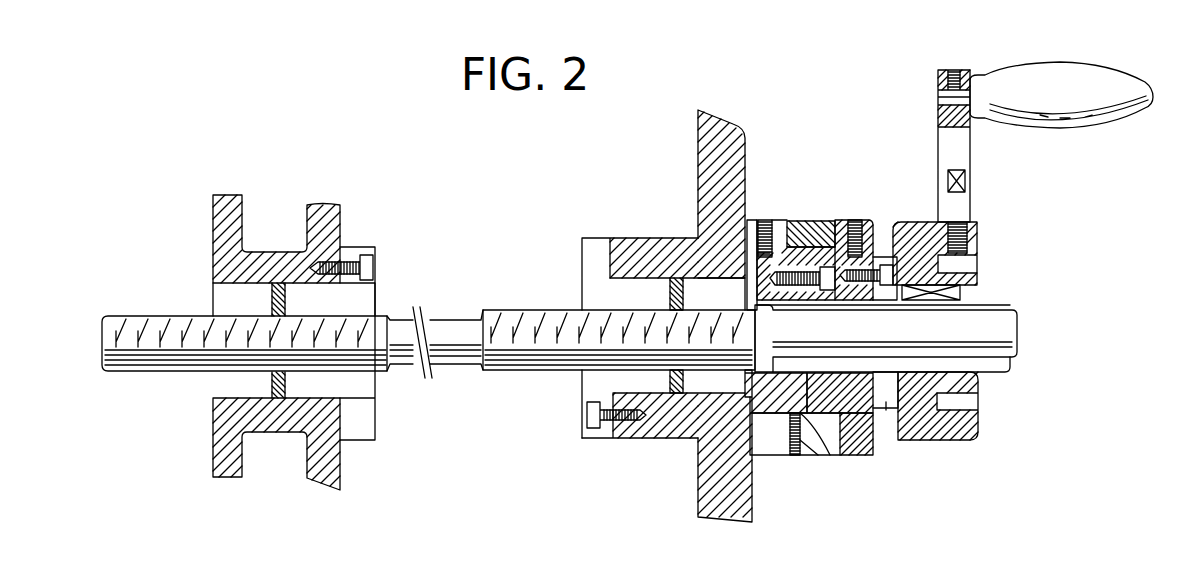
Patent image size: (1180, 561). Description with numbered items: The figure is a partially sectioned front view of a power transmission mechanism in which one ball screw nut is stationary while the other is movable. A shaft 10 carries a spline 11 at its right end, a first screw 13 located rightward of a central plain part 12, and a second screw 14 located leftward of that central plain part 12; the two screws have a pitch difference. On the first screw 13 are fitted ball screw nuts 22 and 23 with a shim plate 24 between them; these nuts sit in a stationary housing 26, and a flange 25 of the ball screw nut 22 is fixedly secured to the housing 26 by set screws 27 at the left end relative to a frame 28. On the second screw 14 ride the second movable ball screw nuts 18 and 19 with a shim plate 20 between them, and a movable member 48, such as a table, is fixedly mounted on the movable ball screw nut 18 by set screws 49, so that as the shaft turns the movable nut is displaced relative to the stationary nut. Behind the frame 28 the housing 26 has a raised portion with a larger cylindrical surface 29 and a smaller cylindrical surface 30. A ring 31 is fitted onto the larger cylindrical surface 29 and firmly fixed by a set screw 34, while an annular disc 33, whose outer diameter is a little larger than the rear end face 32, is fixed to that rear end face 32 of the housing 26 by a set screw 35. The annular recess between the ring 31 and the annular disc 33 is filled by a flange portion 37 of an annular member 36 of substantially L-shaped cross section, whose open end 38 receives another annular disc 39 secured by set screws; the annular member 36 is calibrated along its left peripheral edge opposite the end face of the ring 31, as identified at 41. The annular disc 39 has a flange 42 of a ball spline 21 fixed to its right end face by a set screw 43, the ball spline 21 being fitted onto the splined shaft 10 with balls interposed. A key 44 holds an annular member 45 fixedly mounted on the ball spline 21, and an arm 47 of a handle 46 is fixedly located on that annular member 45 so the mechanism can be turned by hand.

The shaft 10 is at (460, 365).
The spline 11 is at (1017, 318).
The central plain part 12 is at (455, 320).
The first screw 13 is at (532, 312).
The second screw 14 is at (138, 370).
The second movable ball screw nut 18 is at (230, 393).
The second movable ball screw nut 19 is at (345, 380).
The shim plate 20 is at (270, 298).
The ball spline 21 is at (1010, 360).
The ball screw nut 22 is at (600, 382).
The ball screw nut 23 is at (690, 395).
The shim plate 24 is at (677, 290).
The flange 25 is at (600, 438).
The stationary housing 26 is at (625, 238).
The set screws 27 is at (587, 415).
The frame 28 is at (705, 500).
The larger cylindrical surface 29 is at (785, 265).
The smaller cylindrical surface 30 is at (845, 260).
The ring 31 is at (750, 225).
The rear end face 32 is at (805, 440).
The annular disc 33 is at (845, 445).
The set screw 34 is at (855, 235).
The set screw 35 is at (810, 280).
The annular member 36 is at (790, 457).
The flange portion 37 is at (805, 235).
The open end 38 is at (880, 415).
The annular disc 39 is at (880, 275).
The calibration 41 is at (790, 445).
The flange 42 is at (887, 405).
The set screw 43 is at (905, 258).
The key 44 is at (962, 290).
The annular member 45 is at (950, 425).
The handle 46 is at (1063, 72).
The arm 47 is at (960, 144).
The movable member 48 is at (232, 200).
The set screws 49 is at (375, 265).